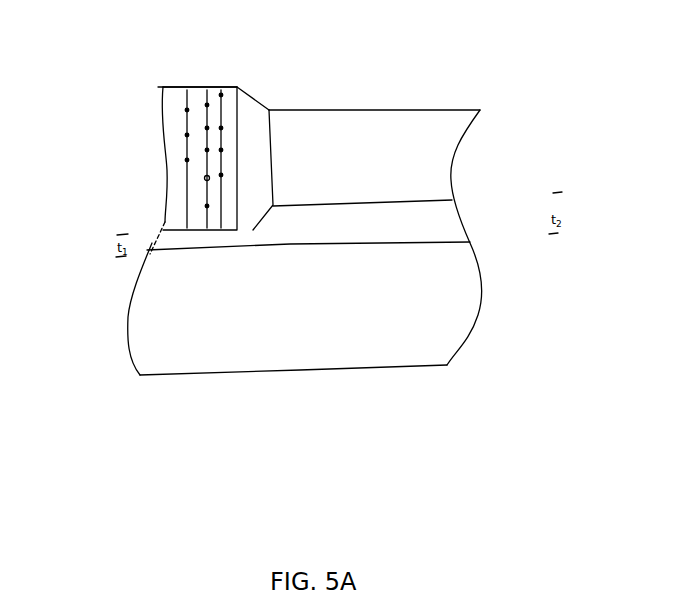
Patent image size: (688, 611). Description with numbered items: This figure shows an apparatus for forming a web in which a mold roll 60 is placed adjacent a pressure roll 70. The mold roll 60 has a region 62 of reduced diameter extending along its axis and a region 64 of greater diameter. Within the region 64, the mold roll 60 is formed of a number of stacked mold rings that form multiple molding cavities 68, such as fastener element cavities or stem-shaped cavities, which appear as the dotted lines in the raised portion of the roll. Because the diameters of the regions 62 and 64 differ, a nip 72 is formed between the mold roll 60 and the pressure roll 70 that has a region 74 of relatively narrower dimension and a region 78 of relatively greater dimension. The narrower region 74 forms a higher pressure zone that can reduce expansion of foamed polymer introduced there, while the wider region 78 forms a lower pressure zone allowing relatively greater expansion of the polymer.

The mold roll 60 is at (330, 130).
The region of reduced diameter 62 is at (170, 128).
The region of greater diameter 64 is at (240, 63).
The molding cavities 68 is at (187, 160).
The pressure roll 70 is at (450, 308).
The nip 72 is at (443, 228).
The region of relatively narrower dimension 74 is at (253, 267).
The region of relatively greater dimension 78 is at (467, 266).